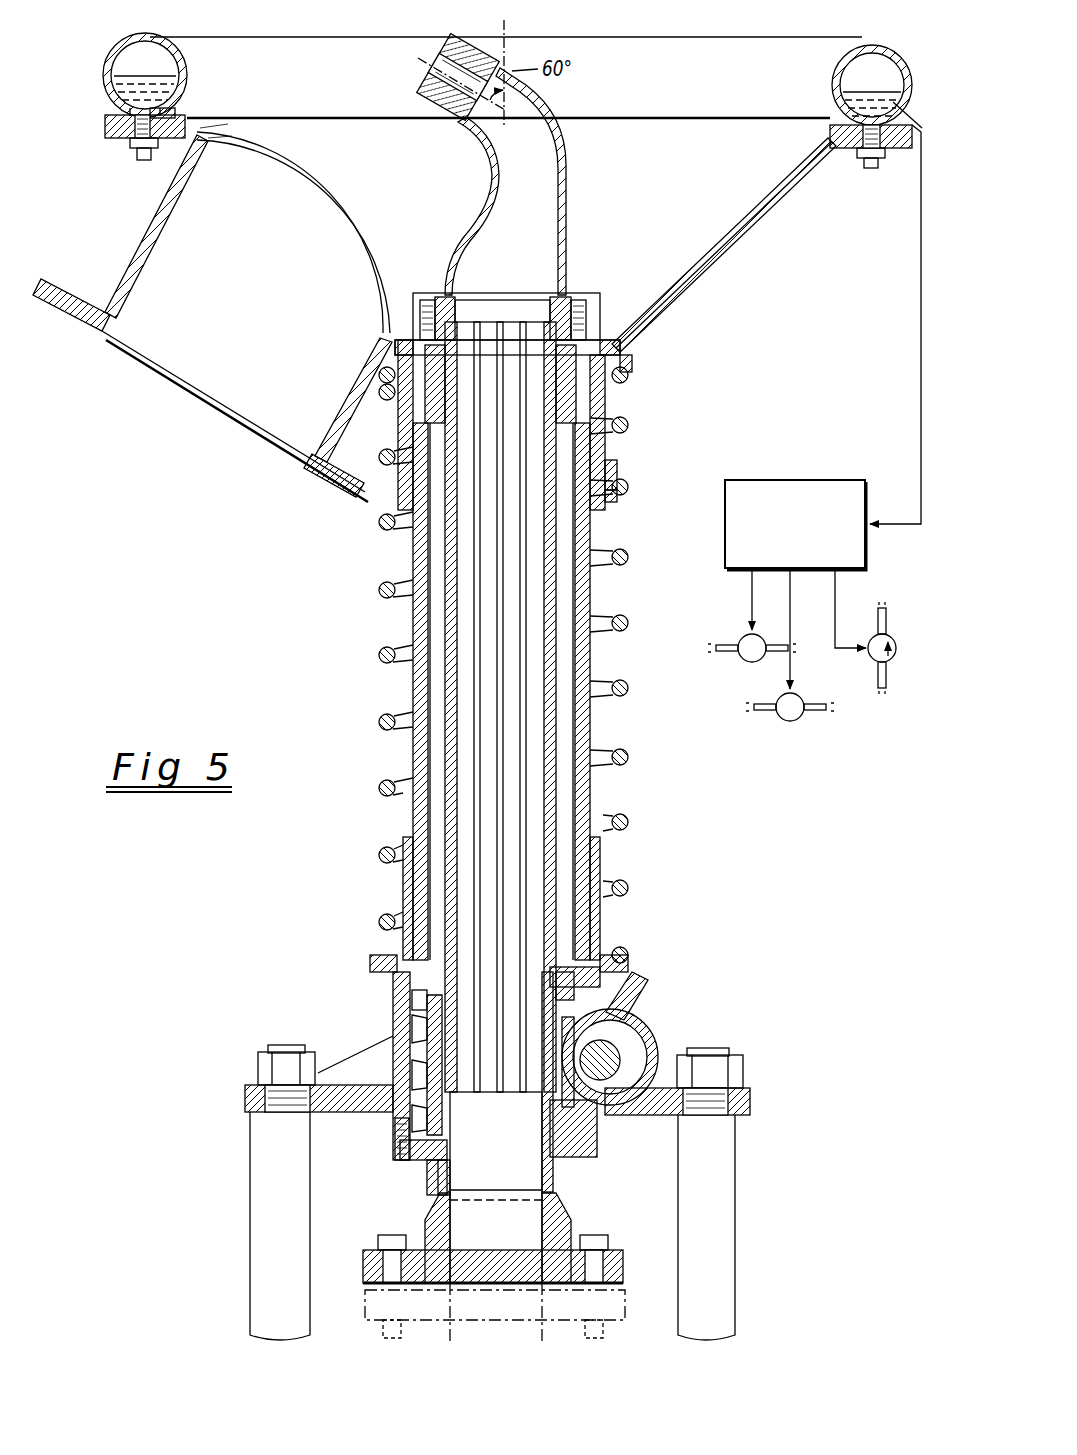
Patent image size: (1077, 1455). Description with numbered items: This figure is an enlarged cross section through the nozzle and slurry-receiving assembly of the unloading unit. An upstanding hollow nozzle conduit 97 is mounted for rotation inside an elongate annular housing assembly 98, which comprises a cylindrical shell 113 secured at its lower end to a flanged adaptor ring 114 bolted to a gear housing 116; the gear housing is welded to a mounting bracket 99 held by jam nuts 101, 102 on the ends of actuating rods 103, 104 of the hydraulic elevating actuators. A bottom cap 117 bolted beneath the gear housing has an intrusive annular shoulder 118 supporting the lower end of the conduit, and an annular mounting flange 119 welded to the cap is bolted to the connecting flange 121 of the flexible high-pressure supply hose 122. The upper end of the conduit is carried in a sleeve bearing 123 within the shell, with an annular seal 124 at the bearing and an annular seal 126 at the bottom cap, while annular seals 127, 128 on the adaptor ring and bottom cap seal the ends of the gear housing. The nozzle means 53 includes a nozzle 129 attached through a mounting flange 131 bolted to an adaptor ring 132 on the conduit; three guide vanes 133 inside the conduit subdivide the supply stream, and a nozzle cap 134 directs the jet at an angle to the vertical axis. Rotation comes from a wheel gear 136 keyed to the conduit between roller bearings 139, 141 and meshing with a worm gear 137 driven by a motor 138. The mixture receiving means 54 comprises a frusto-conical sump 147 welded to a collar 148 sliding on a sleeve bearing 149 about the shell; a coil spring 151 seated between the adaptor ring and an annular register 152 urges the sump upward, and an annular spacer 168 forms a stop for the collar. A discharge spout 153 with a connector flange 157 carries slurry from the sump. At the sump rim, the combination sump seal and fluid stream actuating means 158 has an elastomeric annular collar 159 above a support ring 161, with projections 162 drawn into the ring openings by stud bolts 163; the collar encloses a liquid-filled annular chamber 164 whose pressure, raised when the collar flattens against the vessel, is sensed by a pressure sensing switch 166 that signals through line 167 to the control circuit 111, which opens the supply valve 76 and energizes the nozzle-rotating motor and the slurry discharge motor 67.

The nozzle means 53 is at (567, 107).
The mixture receiving means 54 is at (705, 290).
The electric motor 67 is at (742, 660).
The flow valve 76 is at (893, 638).
The nozzle conduit 97 is at (445, 682).
The housing assembly 98 is at (598, 664).
The mounting bracket 99 is at (400, 1151).
The jam nut 101 is at (256, 1088).
The jam nut 102 is at (742, 1076).
The actuating rod 103 is at (262, 1206).
The actuating rod 104 is at (690, 1191).
The control circuit 111 is at (800, 480).
The cylindrical shell 113 is at (410, 753).
The flanged adaptor ring 114 is at (370, 963).
The gear housing 116 is at (390, 1046).
The bottom cap 117 is at (428, 1181).
The annular shoulder 118 is at (446, 1190).
The annular mounting flange 119 is at (363, 1263).
The connecting flange 121 is at (346, 1300).
The flexible supply hose 122 is at (440, 1327).
The sleeve bearing 123 is at (608, 388).
The annular seal 124 is at (612, 340).
The annular seal 126 is at (542, 1183).
The annular seal 127 is at (542, 992).
The annular seal 128 is at (443, 1161).
The nozzle 129 is at (490, 160).
The mounting flange 131 is at (576, 298).
The adaptor ring 132 is at (400, 338).
The guide vanes 133 is at (524, 322).
The nozzle cap 134 is at (430, 118).
The wheel gear 136 is at (425, 1066).
The worm gear 137 is at (648, 1025).
The motor 138 is at (787, 721).
The roller bearing 139 is at (425, 1004).
The roller bearing 141 is at (395, 1131).
The sump 147 is at (742, 226).
The collar 148 is at (619, 470).
The sleeve bearing 149 is at (619, 490).
The coil spring 151 is at (629, 822).
The annular register 152 is at (636, 362).
The discharge spout 153 is at (165, 226).
The connector flange 157 is at (48, 282).
The combination sump seal and fluid stream actuating means 158 is at (905, 48).
The annular collar 159 is at (106, 60).
The support ring 161 is at (105, 128).
The projections 162 is at (183, 114).
The stud bolts 163 is at (145, 160).
The annular chamber 164 is at (157, 62).
The pressure sensing switch 166 is at (888, 150).
The line 167 is at (919, 331).
The annular spacer 168 is at (603, 864).